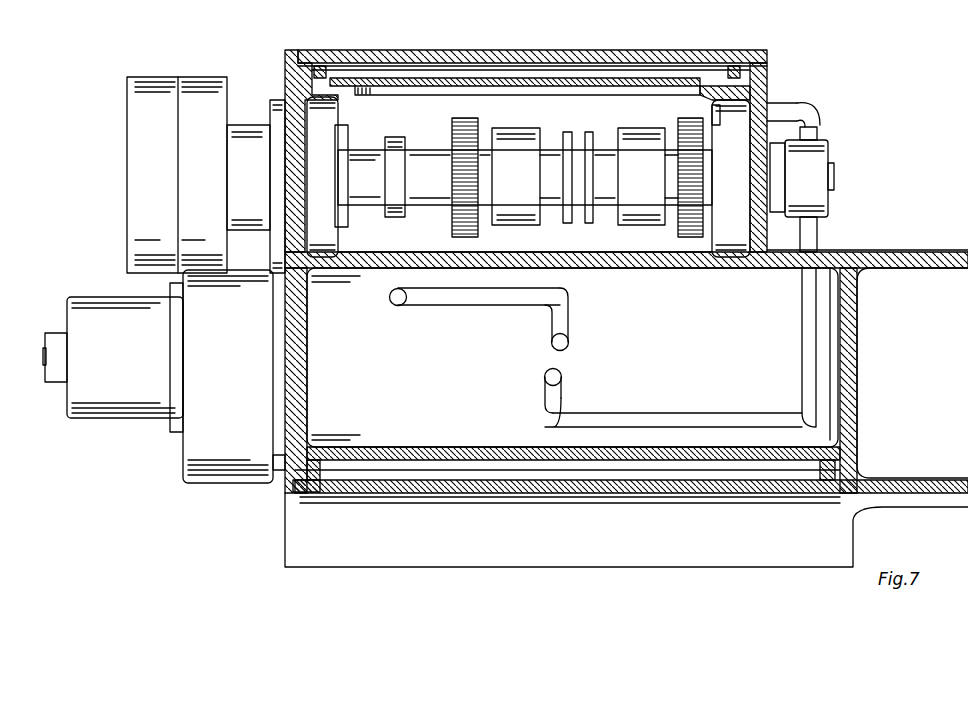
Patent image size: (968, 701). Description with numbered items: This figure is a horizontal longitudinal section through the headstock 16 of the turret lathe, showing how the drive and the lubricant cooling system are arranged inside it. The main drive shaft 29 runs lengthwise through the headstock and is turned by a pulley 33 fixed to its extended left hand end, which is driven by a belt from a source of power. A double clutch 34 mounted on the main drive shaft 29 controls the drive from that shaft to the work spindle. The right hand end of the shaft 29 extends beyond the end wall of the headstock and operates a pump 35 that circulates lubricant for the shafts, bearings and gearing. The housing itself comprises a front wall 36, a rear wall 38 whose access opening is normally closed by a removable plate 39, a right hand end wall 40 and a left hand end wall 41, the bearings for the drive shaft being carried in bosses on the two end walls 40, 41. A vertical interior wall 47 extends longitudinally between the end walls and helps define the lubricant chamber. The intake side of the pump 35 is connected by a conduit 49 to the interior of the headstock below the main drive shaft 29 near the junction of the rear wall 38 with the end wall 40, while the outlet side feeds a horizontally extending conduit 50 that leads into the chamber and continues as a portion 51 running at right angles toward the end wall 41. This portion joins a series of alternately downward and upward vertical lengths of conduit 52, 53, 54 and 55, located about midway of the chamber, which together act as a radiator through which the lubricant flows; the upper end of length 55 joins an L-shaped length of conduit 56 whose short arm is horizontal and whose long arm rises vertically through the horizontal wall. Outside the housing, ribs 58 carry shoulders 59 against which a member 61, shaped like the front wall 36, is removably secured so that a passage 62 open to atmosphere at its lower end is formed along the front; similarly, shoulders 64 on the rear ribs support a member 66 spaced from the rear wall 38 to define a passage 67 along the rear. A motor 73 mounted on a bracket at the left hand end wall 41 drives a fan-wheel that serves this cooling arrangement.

The headstock 16 is at (828, 264).
The main drive shaft 29 is at (366, 192).
The pulley 33 is at (215, 78).
The double clutch 34 is at (635, 218).
The pump 35 is at (818, 175).
The front wall 36 is at (455, 452).
The rear wall 38 is at (355, 100).
The removable plate 39 is at (545, 88).
The right hand end wall 40 is at (787, 108).
The left hand end wall 41 is at (320, 282).
The vertical interior wall 47 is at (455, 258).
The conduit 49 is at (770, 125).
The horizontally extending conduit 50 is at (802, 330).
The portion of conduit 51 is at (680, 416).
The length of conduit 52 is at (545, 422).
The length of conduit 53 is at (560, 378).
The length of conduit 54 is at (566, 344).
The length of conduit 55 is at (563, 290).
The L-shaped length of conduit 56 is at (480, 300).
The ribs 58 is at (848, 462).
The shoulders 59 is at (318, 470).
The member 61 is at (528, 492).
The passage 62 is at (600, 472).
The shoulders 64 is at (322, 72).
The member 66 is at (498, 58).
The passage 67 is at (604, 72).
The motor 73 is at (158, 376).